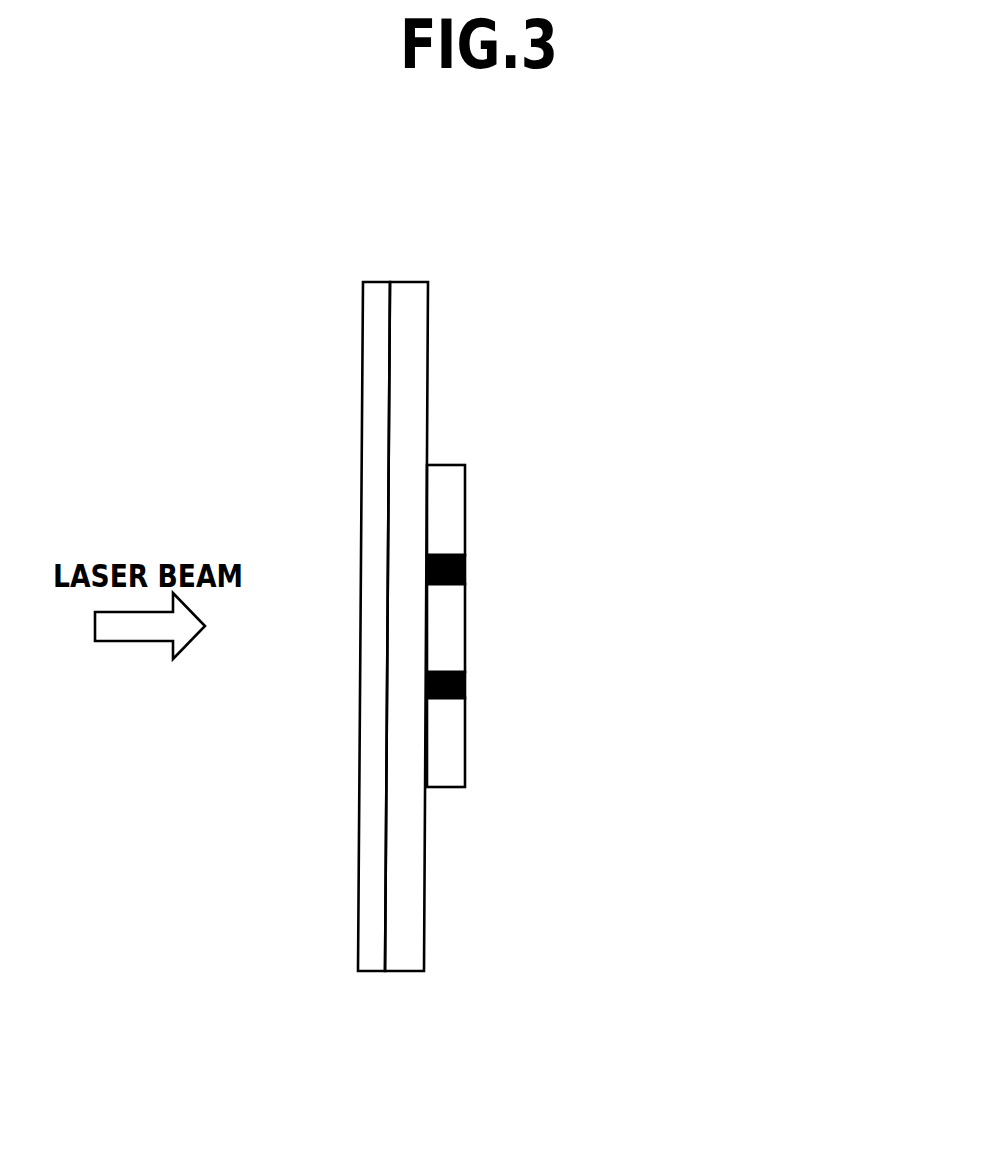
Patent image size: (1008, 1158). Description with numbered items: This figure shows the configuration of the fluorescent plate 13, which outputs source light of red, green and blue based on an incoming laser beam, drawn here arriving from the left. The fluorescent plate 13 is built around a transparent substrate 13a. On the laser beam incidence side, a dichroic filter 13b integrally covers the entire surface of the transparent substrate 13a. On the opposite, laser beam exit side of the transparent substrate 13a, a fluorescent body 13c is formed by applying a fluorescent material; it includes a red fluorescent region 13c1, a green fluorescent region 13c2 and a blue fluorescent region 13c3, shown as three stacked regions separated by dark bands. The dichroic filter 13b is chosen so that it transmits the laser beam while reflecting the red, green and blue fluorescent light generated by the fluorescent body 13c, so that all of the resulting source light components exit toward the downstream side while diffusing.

The fluorescent plate 13 is at (423, 607).
The transparent substrate 13a is at (415, 376).
The dichroic filter 13b is at (373, 382).
The fluorescent body 13c is at (656, 626).
The red fluorescent region 13c1 is at (466, 523).
The green fluorescent region 13c2 is at (466, 627).
The blue fluorescent region 13c3 is at (498, 742).